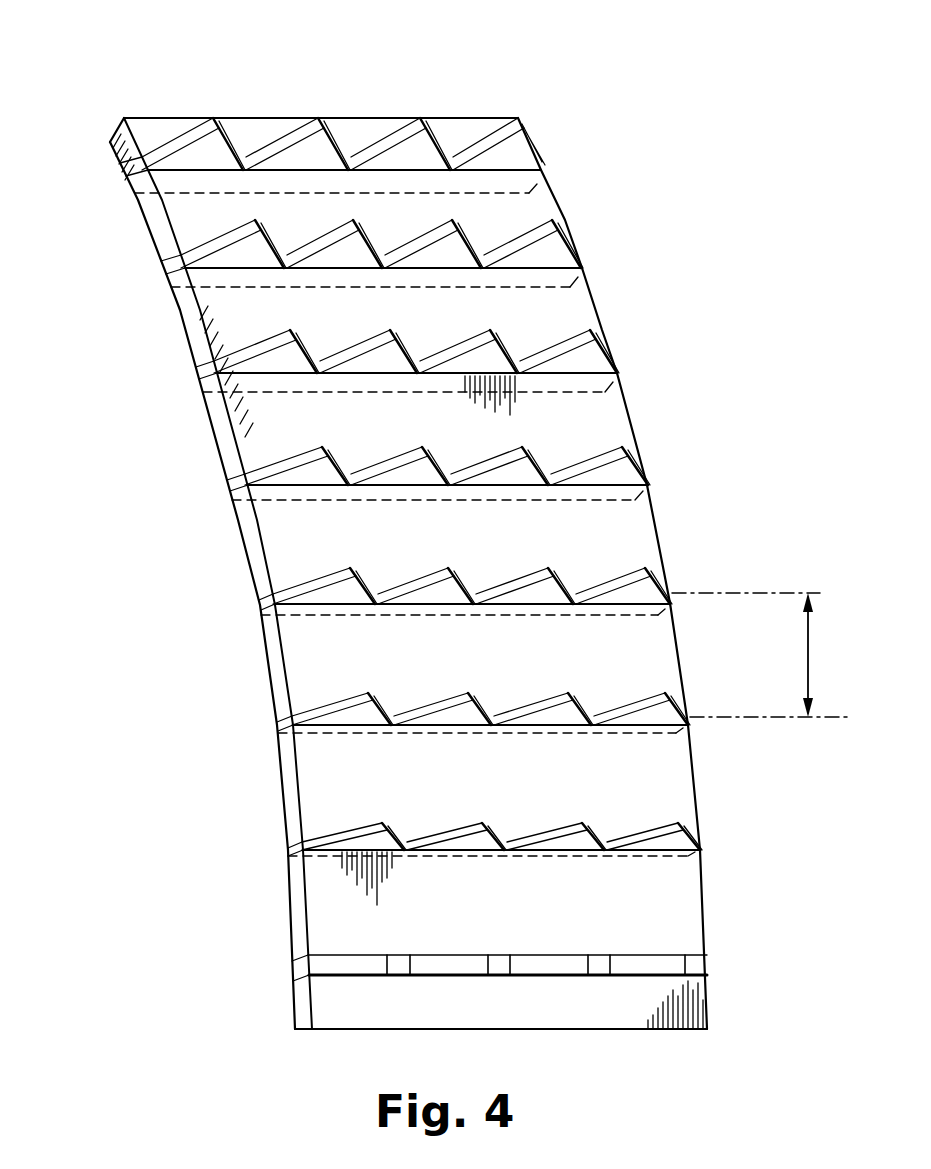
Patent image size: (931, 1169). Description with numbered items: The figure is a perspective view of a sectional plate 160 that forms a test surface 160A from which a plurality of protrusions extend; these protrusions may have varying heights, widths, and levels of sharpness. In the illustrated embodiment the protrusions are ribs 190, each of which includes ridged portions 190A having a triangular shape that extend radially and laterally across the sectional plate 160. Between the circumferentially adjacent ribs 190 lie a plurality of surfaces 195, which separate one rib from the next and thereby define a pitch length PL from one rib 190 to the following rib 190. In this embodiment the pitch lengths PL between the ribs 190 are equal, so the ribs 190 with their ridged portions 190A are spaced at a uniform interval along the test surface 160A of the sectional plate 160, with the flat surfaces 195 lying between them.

The sectional plate 160 is at (98, 109).
The test surface 160A is at (625, 395).
The surfaces 195 is at (534, 208).
The ribs 190 is at (272, 612).
The ridged portions 190A is at (317, 477).
The pitch length PL is at (768, 655).